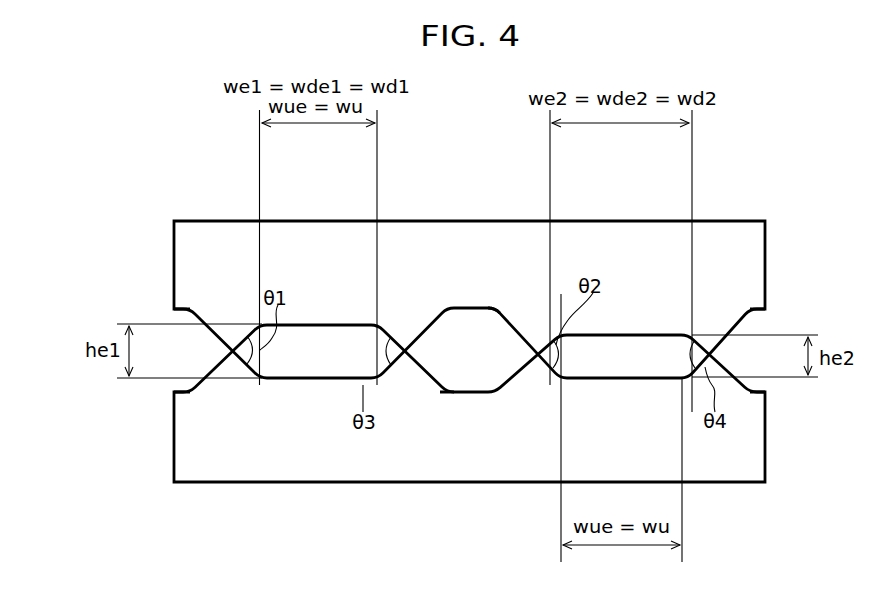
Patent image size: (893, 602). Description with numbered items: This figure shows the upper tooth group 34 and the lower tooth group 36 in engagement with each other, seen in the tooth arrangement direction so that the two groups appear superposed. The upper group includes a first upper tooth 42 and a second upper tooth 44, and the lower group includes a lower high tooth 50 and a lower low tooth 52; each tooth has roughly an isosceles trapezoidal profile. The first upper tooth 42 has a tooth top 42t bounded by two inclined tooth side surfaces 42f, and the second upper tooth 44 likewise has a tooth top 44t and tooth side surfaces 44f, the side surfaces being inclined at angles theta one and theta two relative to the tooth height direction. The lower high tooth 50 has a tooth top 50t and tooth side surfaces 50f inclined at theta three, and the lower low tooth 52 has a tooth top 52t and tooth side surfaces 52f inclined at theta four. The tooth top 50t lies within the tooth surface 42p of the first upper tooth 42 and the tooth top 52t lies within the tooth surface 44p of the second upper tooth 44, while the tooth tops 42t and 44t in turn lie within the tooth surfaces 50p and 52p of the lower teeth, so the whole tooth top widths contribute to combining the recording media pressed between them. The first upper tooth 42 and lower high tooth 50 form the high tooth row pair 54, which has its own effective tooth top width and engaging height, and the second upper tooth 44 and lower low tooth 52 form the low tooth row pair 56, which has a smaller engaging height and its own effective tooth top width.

The upper tooth group 34 is at (730, 218).
The lower tooth group 36 is at (722, 483).
The first upper tooth 42 is at (432, 325).
The second upper tooth 44 is at (513, 333).
The lower high tooth 50 is at (212, 367).
The lower low tooth 52 is at (729, 367).
The high tooth row pair 54 is at (282, 267).
The low tooth row pair 56 is at (565, 272).
The tooth side surface of the first upper tooth 42f is at (242, 375).
The tooth top of the first upper tooth 42t is at (297, 379).
The tooth surface of the first upper tooth 42p is at (358, 369).
The tooth side surface of the second upper tooth 44f is at (740, 320).
The tooth top of the second upper tooth 44t is at (593, 378).
The tooth surface of the second upper tooth 44p is at (670, 370).
The tooth side surface of the lower high tooth 50f is at (253, 352).
The tooth top of the lower high tooth 50t is at (302, 323).
The tooth surface of the lower high tooth 50p is at (313, 352).
The tooth side surface of the lower low tooth 52f is at (503, 372).
The tooth top of the lower low tooth 52t is at (607, 335).
The tooth surface of the lower low tooth 52p is at (612, 370).